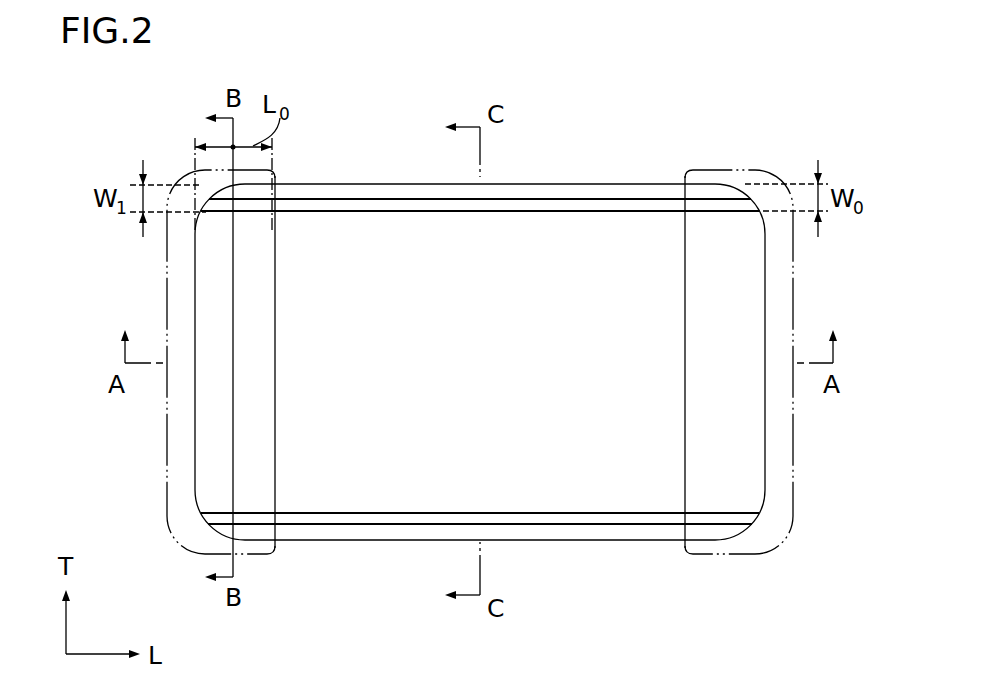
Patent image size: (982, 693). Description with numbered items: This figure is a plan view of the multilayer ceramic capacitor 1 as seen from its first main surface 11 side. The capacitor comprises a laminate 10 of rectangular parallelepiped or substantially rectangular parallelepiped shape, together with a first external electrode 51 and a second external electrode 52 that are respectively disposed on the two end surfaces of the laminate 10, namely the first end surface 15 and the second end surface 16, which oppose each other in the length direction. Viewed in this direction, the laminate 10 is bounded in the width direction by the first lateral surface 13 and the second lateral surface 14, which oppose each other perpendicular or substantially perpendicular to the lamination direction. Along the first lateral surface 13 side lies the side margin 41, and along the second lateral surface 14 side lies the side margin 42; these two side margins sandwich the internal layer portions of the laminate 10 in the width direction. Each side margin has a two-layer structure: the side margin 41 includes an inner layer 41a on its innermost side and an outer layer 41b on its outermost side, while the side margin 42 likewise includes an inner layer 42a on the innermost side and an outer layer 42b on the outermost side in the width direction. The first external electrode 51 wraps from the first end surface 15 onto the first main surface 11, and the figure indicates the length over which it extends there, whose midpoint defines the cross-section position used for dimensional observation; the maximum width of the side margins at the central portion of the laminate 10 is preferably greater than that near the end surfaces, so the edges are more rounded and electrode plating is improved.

The multilayer ceramic capacitor 1 is at (140, 123).
The laminate 10 is at (659, 174).
The first main surface 11 is at (435, 273).
The first lateral surface 13 is at (598, 541).
The second lateral surface 14 is at (335, 184).
The first end surface 15 is at (197, 440).
The second end surface 16 is at (766, 428).
The side margin 41 is at (420, 618).
The inner layer 41a is at (315, 518).
The outer layer 41b is at (378, 532).
The side margin 42 is at (640, 103).
The inner layer 42a is at (537, 207).
The outer layer 42b is at (600, 192).
The first external electrode 51 is at (173, 272).
The second external electrode 52 is at (795, 272).